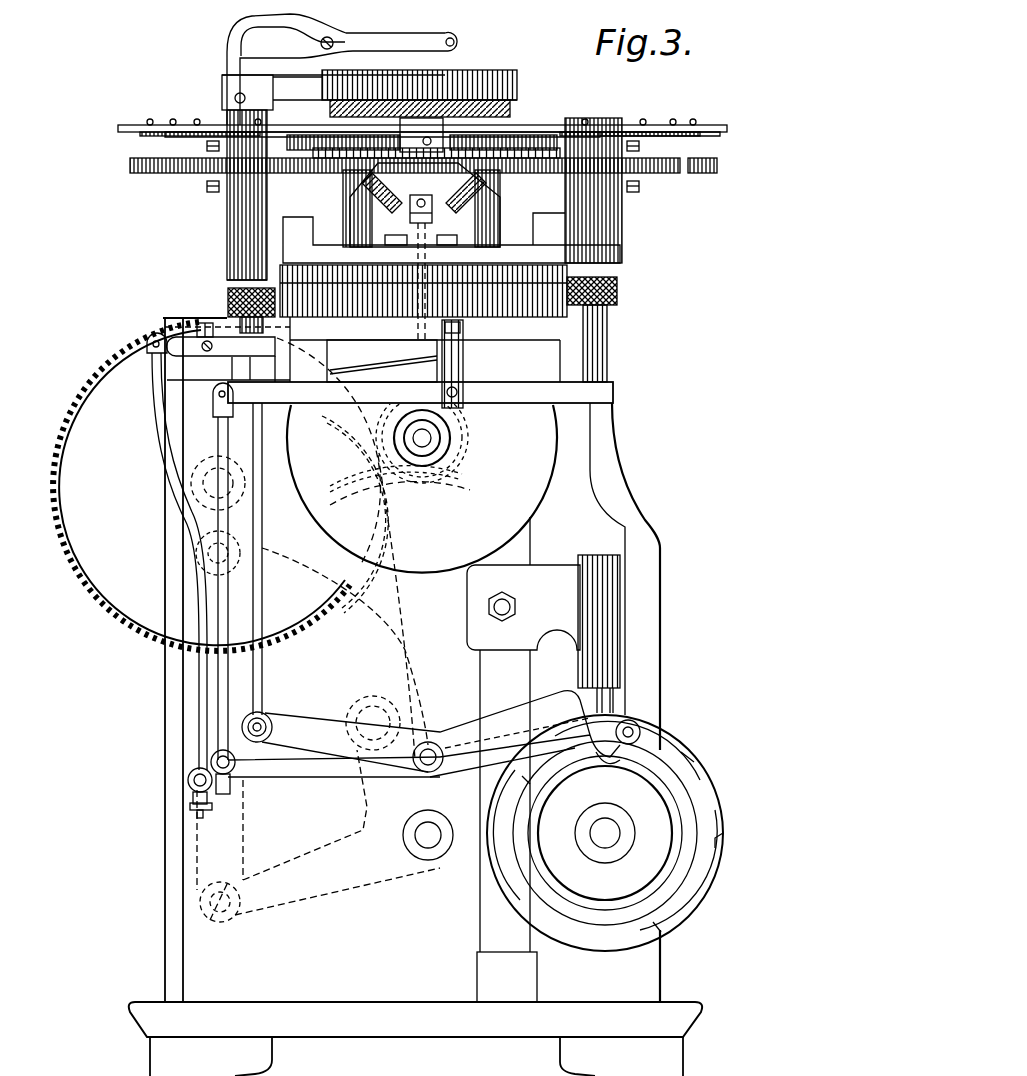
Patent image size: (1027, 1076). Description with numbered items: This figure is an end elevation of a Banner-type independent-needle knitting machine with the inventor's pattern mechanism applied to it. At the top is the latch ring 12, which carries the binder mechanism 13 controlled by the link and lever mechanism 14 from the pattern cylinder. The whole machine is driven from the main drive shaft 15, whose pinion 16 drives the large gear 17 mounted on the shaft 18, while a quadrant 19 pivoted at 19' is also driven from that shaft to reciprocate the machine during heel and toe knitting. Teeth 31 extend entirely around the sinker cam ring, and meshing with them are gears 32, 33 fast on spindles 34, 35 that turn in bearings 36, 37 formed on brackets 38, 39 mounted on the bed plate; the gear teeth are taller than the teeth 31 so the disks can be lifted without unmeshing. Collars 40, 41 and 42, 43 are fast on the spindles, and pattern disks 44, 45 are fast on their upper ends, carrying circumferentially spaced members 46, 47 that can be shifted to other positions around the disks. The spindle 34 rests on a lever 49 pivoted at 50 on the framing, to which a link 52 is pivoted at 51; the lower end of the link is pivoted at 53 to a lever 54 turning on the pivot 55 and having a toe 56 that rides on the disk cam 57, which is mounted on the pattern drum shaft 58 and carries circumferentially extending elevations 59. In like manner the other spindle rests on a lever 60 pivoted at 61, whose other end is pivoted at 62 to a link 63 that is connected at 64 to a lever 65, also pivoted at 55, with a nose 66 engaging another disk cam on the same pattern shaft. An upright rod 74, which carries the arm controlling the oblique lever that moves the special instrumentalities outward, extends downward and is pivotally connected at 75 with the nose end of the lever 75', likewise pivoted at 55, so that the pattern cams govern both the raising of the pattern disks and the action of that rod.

The latch ring 12 is at (498, 78).
The binder mechanism 13 is at (355, 38).
The link and lever mechanism 14 is at (270, 712).
The main drive shaft 15 is at (432, 440).
The pinion 16 is at (466, 426).
The large gear 17 is at (70, 410).
The shaft 18 is at (212, 470).
The quadrant 19 is at (318, 688).
The quadrant pivot 19' is at (410, 836).
The teeth 31 is at (425, 168).
The gear 32 is at (185, 170).
The gear 33 is at (695, 172).
The spindle 34 is at (230, 290).
The spindle 35 is at (605, 336).
The bearing 36 is at (237, 237).
The bearing 37 is at (612, 224).
The bracket 38 is at (298, 230).
The bracket 39 is at (533, 220).
The collar 40 is at (230, 145).
The collar 41 is at (233, 195).
The collar 42 is at (608, 135).
The collar 43 is at (610, 194).
The pattern disk 44 is at (160, 135).
The pattern disk 45 is at (690, 132).
The members 46 is at (140, 126).
The members 47 is at (707, 126).
The lever 49 is at (236, 350).
The pivot 50 is at (205, 352).
The pivot 51 is at (152, 354).
The link 52 is at (178, 478).
The pivot 53 is at (188, 780).
The lever 54 is at (305, 777).
The pivot 55 is at (420, 770).
The toe 56 is at (596, 758).
The disk cam 57 is at (658, 785).
The pattern drum shaft 58 is at (603, 848).
The elevations 59 is at (700, 805).
The lever 60 is at (540, 396).
The pivot 61 is at (458, 392).
The pivot 62 is at (214, 400).
The link 63 is at (215, 688).
The pivot 64 is at (238, 772).
The lever 65 is at (300, 752).
The nose 66 is at (575, 715).
The upright rod 74 is at (625, 500).
The pivot 75 is at (653, 724).
The lever 75' is at (515, 724).